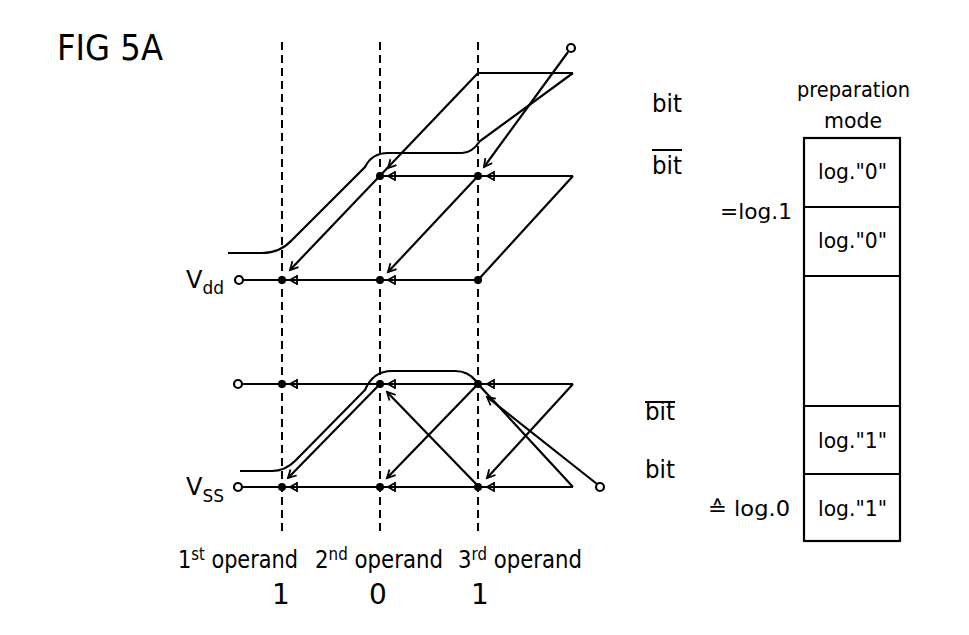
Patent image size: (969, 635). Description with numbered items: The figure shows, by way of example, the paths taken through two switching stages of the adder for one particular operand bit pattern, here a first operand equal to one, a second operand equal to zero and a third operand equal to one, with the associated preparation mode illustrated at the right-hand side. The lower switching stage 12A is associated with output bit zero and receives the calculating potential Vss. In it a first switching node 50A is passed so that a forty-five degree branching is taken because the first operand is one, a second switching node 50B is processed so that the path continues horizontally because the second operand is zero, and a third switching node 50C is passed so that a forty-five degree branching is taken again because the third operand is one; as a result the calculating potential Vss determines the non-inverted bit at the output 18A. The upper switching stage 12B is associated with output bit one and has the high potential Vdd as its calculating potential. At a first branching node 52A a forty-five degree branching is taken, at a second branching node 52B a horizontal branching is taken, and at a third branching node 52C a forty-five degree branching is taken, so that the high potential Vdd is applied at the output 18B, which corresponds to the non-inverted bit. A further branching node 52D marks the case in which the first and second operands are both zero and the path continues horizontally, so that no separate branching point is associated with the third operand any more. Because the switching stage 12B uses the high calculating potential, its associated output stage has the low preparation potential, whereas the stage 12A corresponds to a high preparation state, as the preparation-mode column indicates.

The switching stage 12A is at (337, 435).
The switching stage 12B is at (339, 187).
The output 18A is at (555, 444).
The output 18B is at (553, 105).
The first switching node 50A is at (284, 491).
The second switching node 50B is at (376, 382).
The third switching node 50C is at (483, 382).
The first branching node 52A is at (283, 284).
The second branching node 52B is at (383, 180).
The third branching node 52C is at (481, 180).
The branching node 52D is at (378, 277).